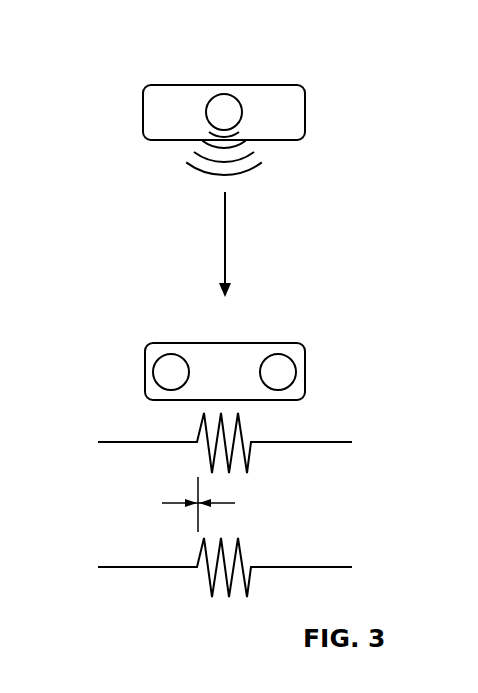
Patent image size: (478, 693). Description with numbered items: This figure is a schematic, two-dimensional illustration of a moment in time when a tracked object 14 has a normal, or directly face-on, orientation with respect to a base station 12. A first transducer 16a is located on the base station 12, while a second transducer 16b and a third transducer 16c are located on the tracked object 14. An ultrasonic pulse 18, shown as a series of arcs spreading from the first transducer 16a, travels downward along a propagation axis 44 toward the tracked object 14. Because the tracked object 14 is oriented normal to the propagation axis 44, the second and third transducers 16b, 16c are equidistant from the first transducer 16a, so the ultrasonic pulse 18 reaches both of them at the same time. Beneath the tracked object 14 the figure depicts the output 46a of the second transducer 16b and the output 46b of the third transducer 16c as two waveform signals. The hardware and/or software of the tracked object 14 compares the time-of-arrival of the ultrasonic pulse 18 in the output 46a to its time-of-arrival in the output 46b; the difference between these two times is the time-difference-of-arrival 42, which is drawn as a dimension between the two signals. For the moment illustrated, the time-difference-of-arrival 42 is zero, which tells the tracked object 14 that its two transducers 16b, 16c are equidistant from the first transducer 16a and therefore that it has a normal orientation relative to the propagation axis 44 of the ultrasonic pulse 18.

The base station 12 is at (329, 85).
The tracked object 14 is at (304, 343).
The first transducer 16a is at (219, 91).
The second transducer 16b is at (152, 360).
The third transducer 16c is at (301, 363).
The ultrasonic pulse 18 is at (279, 178).
The time-difference-of-arrival 42 is at (170, 500).
The propagation axis 44 is at (225, 237).
The output of the second transducer 46a is at (269, 463).
The output of the third transducer 46b is at (261, 547).